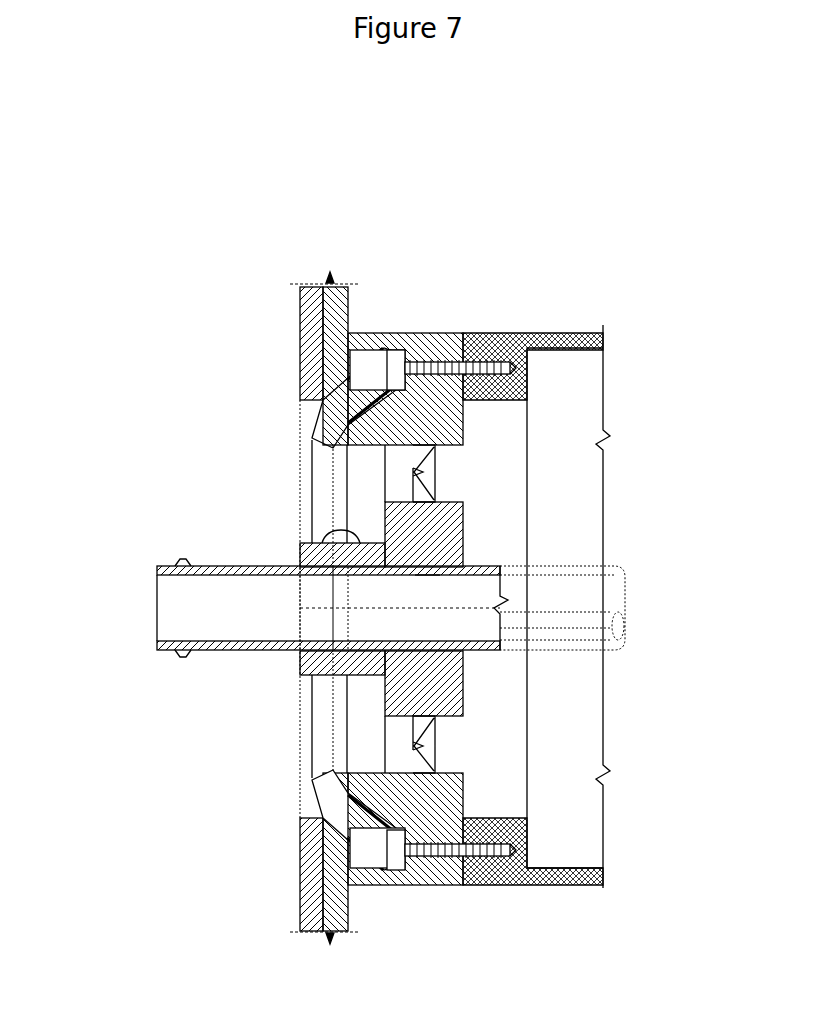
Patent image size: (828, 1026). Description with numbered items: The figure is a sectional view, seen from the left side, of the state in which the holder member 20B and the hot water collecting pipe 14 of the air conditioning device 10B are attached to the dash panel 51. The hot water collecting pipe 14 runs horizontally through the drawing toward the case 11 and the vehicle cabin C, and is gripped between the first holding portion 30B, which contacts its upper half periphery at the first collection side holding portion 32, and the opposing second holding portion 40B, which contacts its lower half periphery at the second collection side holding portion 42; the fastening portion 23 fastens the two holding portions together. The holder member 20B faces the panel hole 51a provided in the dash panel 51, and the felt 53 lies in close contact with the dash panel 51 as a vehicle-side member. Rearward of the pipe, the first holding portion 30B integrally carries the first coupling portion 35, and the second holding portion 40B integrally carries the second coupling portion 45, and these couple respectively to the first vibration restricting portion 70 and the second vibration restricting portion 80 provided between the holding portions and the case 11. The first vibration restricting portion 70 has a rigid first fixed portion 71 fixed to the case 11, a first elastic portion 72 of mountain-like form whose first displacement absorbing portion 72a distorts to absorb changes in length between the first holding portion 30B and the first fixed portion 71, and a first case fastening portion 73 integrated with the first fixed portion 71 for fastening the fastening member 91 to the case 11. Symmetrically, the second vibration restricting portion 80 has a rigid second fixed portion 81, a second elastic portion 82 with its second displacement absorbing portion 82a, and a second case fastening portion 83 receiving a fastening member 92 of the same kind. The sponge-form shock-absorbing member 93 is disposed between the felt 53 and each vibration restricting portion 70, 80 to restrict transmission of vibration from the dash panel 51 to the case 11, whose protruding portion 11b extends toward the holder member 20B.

The air conditioning device 10B is at (152, 270).
The dash panel 51 is at (297, 312).
The felt 53 is at (350, 303).
The panel hole 51a is at (322, 806).
The first vibration restricting portion 70 is at (680, 255).
The first fixed portion 71 is at (470, 415).
The first elastic portion 72 is at (440, 455).
The first displacement absorbing portion 72a is at (420, 472).
The first case fastening portion 73 is at (440, 330).
The fastening member 91 is at (392, 365).
The lower screw 92 is at (392, 852).
The shock-absorbing member 93 is at (362, 335).
The second vibration restricting portion 80 is at (680, 720).
The second fixed portion 81 is at (470, 805).
The second elastic portion 82 is at (440, 765).
The second displacement absorbing portion 82a is at (420, 748).
The second case fastening portion 83 is at (450, 886).
The holder member 20B is at (88, 463).
The fastening portion 23 is at (330, 528).
The first holding portion 30B is at (300, 553).
The first coupling portion 35 is at (465, 525).
The first collection side holding portion 32 is at (428, 578).
The second collection side holding portion 42 is at (428, 640).
The second holding portion 40B is at (300, 665).
The second coupling portion 45 is at (300, 690).
The hot water collecting pipe 14 is at (570, 652).
The vehicle cabin C is at (499, 612).
The case 11 is at (568, 592).
The protruding portion 11b is at (560, 333).